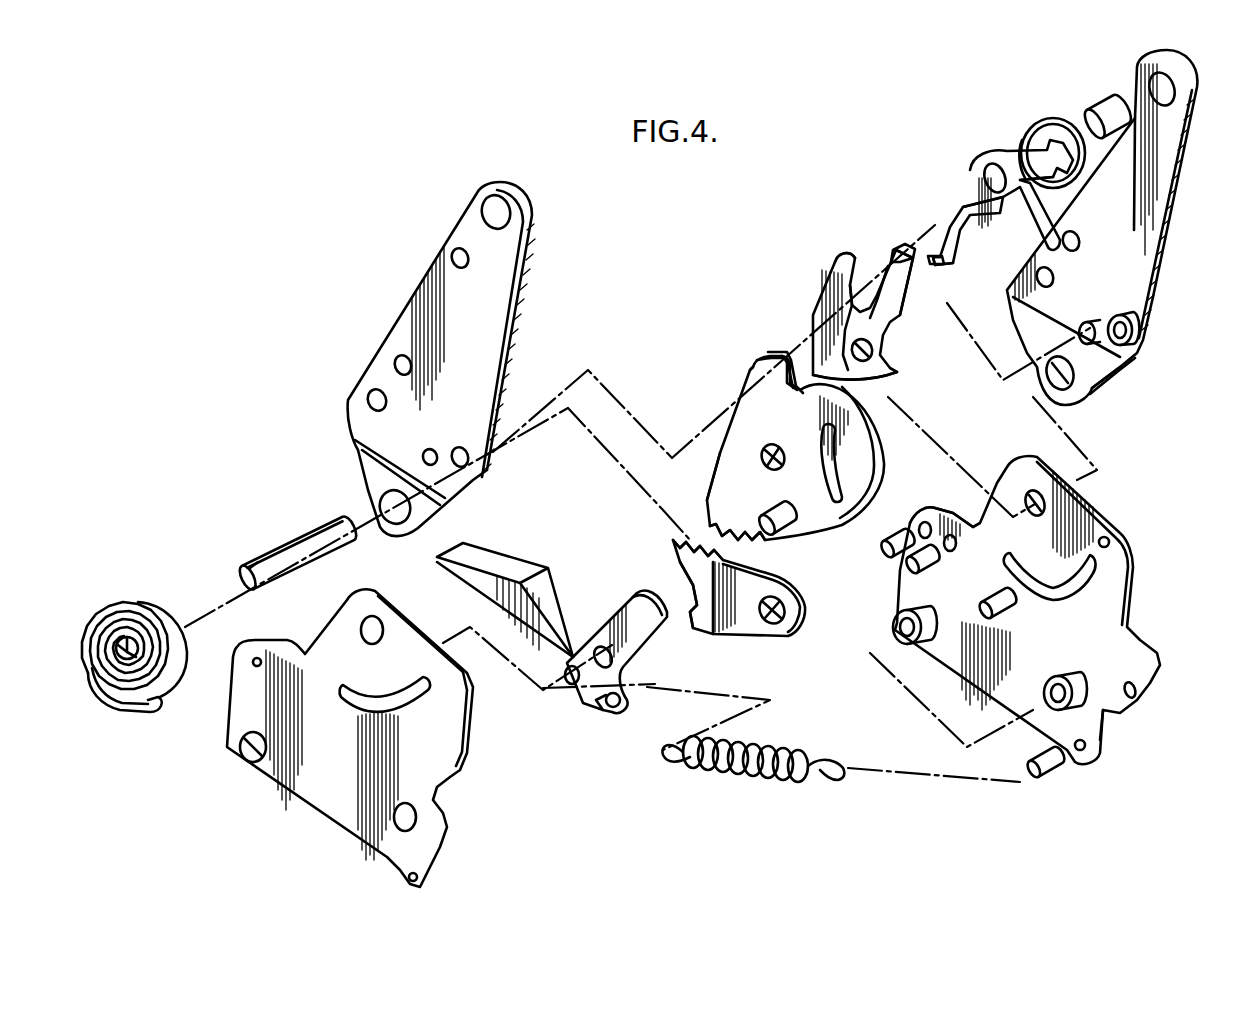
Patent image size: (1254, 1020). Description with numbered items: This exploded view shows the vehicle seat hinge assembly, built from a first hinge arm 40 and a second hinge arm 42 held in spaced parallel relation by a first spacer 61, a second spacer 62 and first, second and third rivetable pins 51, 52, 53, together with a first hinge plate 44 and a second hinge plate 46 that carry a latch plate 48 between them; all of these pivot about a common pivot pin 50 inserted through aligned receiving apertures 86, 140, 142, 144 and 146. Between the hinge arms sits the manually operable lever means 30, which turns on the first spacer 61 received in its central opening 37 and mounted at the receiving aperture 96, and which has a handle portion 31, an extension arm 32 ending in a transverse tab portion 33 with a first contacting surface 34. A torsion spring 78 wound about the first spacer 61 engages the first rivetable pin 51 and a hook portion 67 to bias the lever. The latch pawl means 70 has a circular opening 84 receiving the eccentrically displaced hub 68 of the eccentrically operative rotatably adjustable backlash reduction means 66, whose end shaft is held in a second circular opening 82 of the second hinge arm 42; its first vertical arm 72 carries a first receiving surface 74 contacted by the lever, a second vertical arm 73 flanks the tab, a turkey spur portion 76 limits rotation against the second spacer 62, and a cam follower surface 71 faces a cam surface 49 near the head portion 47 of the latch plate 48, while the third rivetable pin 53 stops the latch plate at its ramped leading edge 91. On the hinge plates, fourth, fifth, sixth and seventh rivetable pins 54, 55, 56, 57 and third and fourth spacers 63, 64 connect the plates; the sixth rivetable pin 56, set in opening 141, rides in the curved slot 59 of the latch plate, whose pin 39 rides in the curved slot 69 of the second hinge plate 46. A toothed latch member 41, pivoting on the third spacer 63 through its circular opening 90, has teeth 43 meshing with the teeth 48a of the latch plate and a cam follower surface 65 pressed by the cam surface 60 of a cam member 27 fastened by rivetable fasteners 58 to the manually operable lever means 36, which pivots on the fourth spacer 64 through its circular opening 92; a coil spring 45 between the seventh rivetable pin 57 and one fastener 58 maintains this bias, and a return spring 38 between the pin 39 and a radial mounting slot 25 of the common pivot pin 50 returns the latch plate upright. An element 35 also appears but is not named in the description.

The radial mounting slot 25 is at (258, 565).
The cam member 27 is at (600, 605).
The manually operable lever means 30 is at (990, 160).
The handle portion 31 is at (1082, 240).
The extension arm 32 is at (962, 238).
The transverse tab portion 33 is at (958, 266).
The first contacting surface 34 is at (1036, 282).
The pin 35 is at (935, 252).
The manually operable lever means 36 is at (545, 590).
The central opening 37 is at (980, 168).
The return spring 38 is at (142, 600).
The pin 39 is at (795, 535).
The first hinge arm 40 is at (1160, 215).
The toothed latch member 41 is at (765, 637).
The second hinge arm 42 is at (500, 258).
The teeth 43 is at (674, 542).
The first hinge plate 44 is at (1125, 592).
The coil spring 45 is at (730, 778).
The second hinge plate 46 is at (448, 743).
The head portion 47 is at (752, 368).
The latch plate 48 is at (860, 545).
The teeth 48a is at (712, 520).
The cam surface 49 is at (760, 355).
The common pivot pin 50 is at (305, 545).
The first rivetable pin 51 is at (452, 253).
The second rivetable pin 52 is at (396, 357).
The third rivetable pin 53 is at (368, 393).
The fourth rivetable pin 54 is at (915, 540).
The fifth rivetable pin 55 is at (935, 565).
The sixth rivetable pin 56 is at (1005, 612).
The seventh rivetable pin 57 is at (1058, 772).
The rivetable fasteners 58 is at (600, 712).
The curved slot 59 is at (852, 468).
The cam surface 60 is at (645, 605).
The first spacer 61 is at (1090, 105).
The second spacer 62 is at (1135, 333).
The third spacer 63 is at (1072, 680).
The fourth spacer 64 is at (928, 628).
The cam follower surface 65 is at (693, 630).
The eccentrically operative rotatably adjustable backlash reduction means 66 is at (1084, 320).
The hook portion 67 is at (1065, 193).
The eccentrically displaced hub 68 is at (1100, 317).
The curved slot 69 is at (348, 712).
The latch pawl means 70 is at (818, 300).
The cam follower surface 71 is at (795, 352).
The first vertical arm 72 is at (842, 252).
The second vertical arm 73 is at (900, 295).
The first receiving surface 74 is at (858, 262).
The turkey spur portion 76 is at (897, 375).
The torsion spring 78 is at (1028, 120).
The second circular opening 82 is at (430, 450).
The circular opening 84 is at (875, 348).
The aperture 86 is at (776, 448).
The circular opening 90 is at (780, 624).
The ramped leading edge 91 is at (742, 455).
The circular opening 92 is at (628, 690).
The receiving aperture 96 is at (1150, 75).
The receiving aperture 140 is at (1070, 385).
The opening 141 is at (1109, 540).
The receiving aperture 142 is at (435, 520).
The aperture 144 is at (1028, 492).
The receiving aperture 146 is at (372, 615).